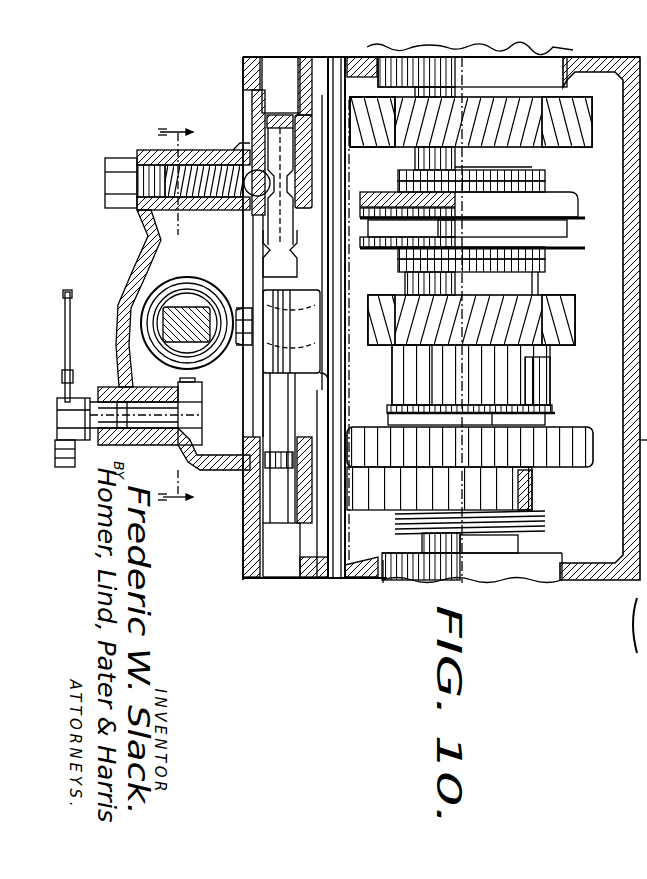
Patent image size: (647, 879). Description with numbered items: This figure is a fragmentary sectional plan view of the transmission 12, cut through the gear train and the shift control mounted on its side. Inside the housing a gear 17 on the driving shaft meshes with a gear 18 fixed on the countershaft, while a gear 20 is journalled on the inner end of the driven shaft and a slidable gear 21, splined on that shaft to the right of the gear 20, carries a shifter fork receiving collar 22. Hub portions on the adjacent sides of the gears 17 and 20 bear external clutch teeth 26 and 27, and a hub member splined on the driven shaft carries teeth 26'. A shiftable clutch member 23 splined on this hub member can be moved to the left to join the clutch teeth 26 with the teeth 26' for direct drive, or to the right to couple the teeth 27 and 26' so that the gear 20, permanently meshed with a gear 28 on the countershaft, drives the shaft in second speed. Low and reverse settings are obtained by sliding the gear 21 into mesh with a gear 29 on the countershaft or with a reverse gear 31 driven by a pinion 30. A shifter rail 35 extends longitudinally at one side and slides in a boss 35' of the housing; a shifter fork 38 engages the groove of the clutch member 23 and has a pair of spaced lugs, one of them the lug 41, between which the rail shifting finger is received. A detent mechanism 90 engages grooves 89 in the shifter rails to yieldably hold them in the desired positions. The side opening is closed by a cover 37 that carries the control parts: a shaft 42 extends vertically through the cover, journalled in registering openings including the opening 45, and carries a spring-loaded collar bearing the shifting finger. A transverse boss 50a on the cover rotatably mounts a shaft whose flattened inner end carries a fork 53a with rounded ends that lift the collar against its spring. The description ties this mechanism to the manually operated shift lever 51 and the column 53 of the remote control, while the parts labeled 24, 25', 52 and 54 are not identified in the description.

The transmission 12 is at (194, 312).
The gear 17 is at (530, 130).
The gear 18 is at (624, 120).
The gear 20 is at (570, 330).
The slidable gear 21 is at (592, 467).
The shifter fork receiving collar 22 is at (547, 412).
The shiftable clutch member 23 is at (575, 216).
The sleeve 24 is at (302, 470).
The shaft 25' is at (342, 336).
The external clutch teeth 26 is at (471, 138).
The teeth 26' is at (372, 139).
The external clutch teeth 27 is at (546, 262).
The gear 28 is at (392, 402).
The gear 29 is at (390, 352).
The pinion 30 is at (393, 520).
The reverse gear 31 is at (532, 480).
The shifter rail 35 is at (178, 152).
The boss 35' is at (316, 317).
The cover 37 is at (136, 255).
The shifter fork 38 is at (401, 254).
The lug 41 is at (142, 322).
The shaft 42 is at (190, 312).
The opening 45 is at (328, 332).
The boss 50a is at (140, 438).
The manually operated shift lever 51 is at (72, 342).
The nut 52 is at (88, 403).
The column 53 is at (126, 410).
The fork 53a is at (202, 405).
The cotter nut 54 is at (61, 461).
The grooves 89 is at (281, 317).
The detent mechanism 90 is at (248, 194).